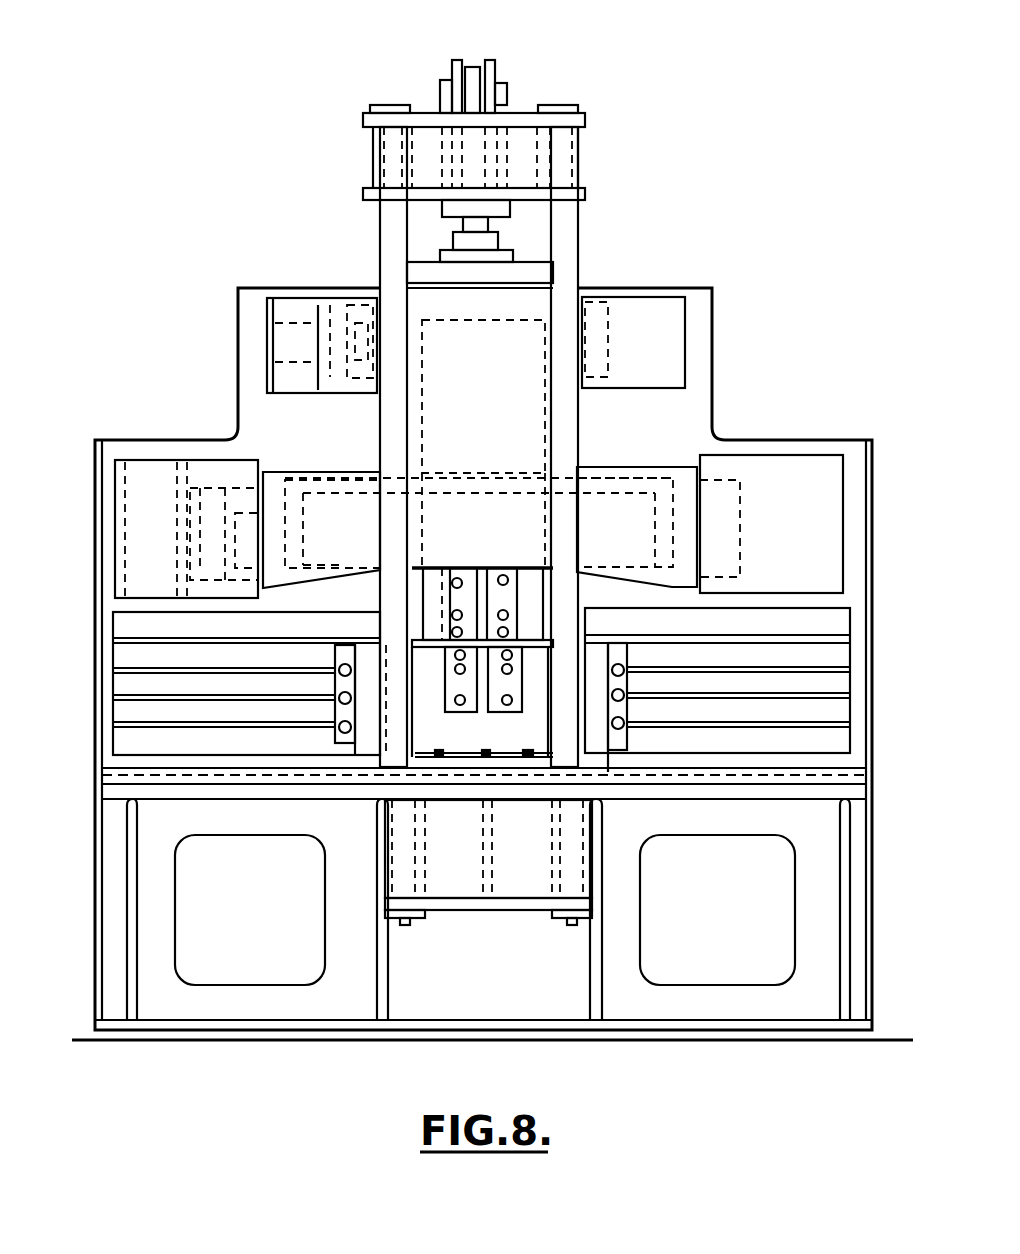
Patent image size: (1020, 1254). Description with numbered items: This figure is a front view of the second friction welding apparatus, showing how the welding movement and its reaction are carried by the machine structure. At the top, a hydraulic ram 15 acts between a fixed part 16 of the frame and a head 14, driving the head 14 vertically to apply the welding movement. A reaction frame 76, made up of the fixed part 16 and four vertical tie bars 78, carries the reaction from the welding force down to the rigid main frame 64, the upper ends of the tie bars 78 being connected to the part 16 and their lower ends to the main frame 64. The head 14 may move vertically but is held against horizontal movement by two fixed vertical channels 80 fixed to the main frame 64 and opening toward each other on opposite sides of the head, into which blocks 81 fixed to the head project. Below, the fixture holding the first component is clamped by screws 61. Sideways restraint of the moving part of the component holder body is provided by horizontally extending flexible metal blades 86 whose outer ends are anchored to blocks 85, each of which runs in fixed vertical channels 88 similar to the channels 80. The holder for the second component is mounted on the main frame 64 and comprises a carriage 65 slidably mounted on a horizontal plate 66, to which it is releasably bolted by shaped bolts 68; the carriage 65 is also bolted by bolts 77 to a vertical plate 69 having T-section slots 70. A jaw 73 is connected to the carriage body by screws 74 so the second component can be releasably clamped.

The head 14 is at (520, 293).
The hydraulic ram 15 is at (492, 208).
The fixed part of the frame 16 is at (490, 75).
The screws 61 is at (500, 578).
The main frame 64 is at (685, 417).
The carriage 65 is at (517, 770).
The horizontal plate 66 is at (258, 784).
The bolts 68 is at (486, 760).
The vertical plate 69 is at (830, 683).
The T-section slots 70 is at (833, 697).
The jaw 73 is at (507, 682).
The screws 74 is at (452, 662).
The reaction frame 76 is at (362, 257).
The bolts 77 is at (628, 700).
The vertical tie bars 78 is at (560, 378).
The fixed vertical channels 80 is at (298, 310).
The blocks 81 is at (608, 335).
The blocks 85 is at (740, 537).
The flexible metal blades 86 is at (347, 470).
The fixed vertical channels 88 is at (205, 473).